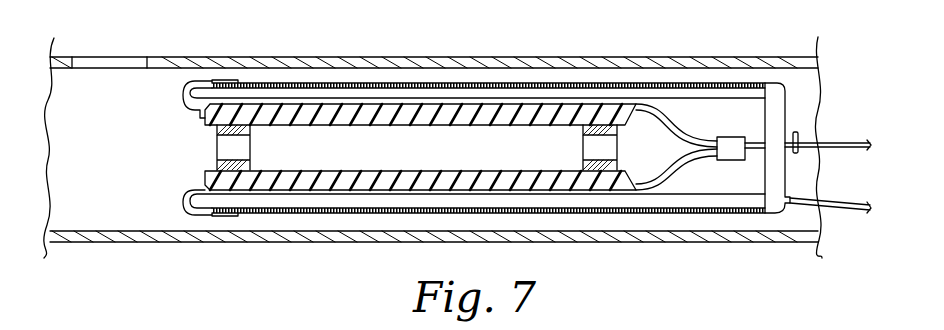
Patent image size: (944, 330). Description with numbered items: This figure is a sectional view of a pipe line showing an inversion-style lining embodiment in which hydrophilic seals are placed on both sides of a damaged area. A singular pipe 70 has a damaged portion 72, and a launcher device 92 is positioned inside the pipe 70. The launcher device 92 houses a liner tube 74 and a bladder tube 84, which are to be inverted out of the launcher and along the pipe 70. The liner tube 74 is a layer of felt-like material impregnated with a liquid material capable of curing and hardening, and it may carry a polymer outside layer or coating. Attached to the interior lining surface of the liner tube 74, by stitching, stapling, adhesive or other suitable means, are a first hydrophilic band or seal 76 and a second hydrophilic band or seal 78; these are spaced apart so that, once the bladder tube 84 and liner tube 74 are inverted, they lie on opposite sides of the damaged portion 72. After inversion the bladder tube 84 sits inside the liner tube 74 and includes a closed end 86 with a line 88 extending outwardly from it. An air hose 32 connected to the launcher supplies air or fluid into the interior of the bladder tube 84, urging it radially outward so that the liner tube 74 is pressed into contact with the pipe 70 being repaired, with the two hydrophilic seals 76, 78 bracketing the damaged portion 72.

The pipe 70 is at (267, 63).
The damaged portion 72 is at (107, 64).
The liner tube 74 is at (407, 172).
The first hydrophilic band or seal 76 is at (222, 148).
The second hydrophilic band or seal 78 is at (613, 147).
The bladder tube 84 is at (367, 100).
The closed end 86 is at (735, 140).
The line 88 is at (835, 146).
The launcher device 92 is at (453, 84).
The air hose 32 is at (830, 206).